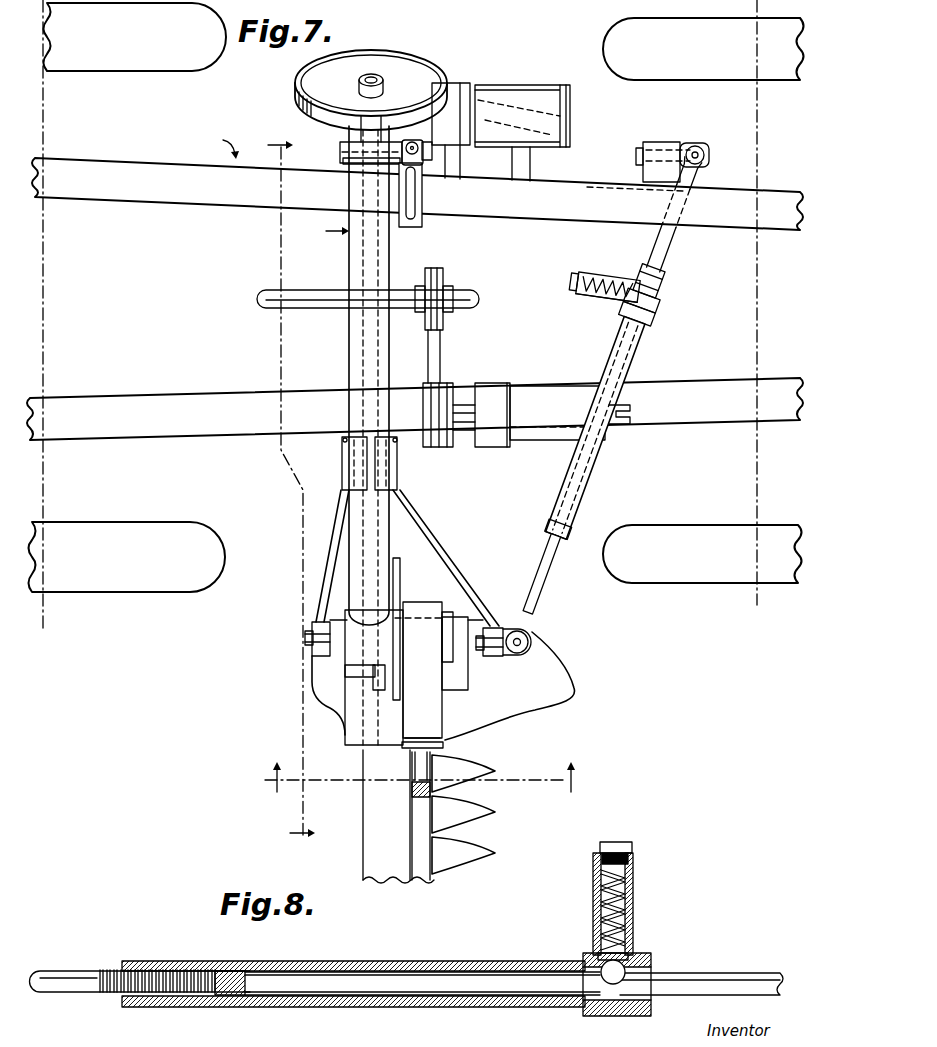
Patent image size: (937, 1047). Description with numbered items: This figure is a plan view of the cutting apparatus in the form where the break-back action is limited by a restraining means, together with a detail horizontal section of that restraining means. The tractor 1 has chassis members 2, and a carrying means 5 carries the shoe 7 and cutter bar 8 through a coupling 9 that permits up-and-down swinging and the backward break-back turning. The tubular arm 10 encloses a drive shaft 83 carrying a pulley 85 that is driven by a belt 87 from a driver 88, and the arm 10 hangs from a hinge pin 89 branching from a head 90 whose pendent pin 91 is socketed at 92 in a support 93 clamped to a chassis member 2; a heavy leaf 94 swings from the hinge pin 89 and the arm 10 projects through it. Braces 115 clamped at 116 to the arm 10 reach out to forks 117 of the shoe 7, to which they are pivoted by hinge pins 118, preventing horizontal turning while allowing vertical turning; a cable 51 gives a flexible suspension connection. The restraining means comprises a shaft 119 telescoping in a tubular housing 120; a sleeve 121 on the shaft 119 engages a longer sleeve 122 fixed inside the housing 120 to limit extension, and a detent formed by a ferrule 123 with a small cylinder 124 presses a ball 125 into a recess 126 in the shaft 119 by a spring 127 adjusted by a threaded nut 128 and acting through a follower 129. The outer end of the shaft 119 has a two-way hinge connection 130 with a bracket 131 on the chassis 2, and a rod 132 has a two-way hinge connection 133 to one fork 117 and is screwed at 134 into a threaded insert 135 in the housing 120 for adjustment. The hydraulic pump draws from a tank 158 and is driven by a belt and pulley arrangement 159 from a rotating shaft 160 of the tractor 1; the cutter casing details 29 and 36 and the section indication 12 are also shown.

In FIG. 7, the tractor 1 is at (224, 143).
In FIG. 7, the chassis members 2 is at (722, 198).
In FIG. 7, the carrying means 5 is at (330, 231).
In FIG. 7, the shoe 7 is at (538, 667).
In FIG. 7, the cutter bar 8 is at (378, 789).
In FIG. 7, the coupling 9 is at (291, 490).
In FIG. 7, the arm 10 is at (362, 249).
In FIG. 7, the section line 12 is at (425, 772).
In FIG. 7, the housing 29 is at (403, 603).
In FIG. 7, the digging bit 36 is at (420, 828).
In FIG. 7, the cable 51 is at (400, 563).
In FIG. 7, the shaft 83 is at (371, 75).
In FIG. 7, the pulley 85 is at (397, 55).
In FIG. 7, the belt 87 is at (487, 120).
In FIG. 7, the driver 88 is at (552, 85).
In FIG. 7, the hinge pin 89 is at (340, 148).
In FIG. 7, the head 90 is at (413, 140).
In FIG. 7, the pendent pin 91 is at (415, 145).
In FIG. 7, the socket 92 is at (445, 135).
In FIG. 7, the support 93 is at (422, 225).
In FIG. 7, the leaf 94 is at (345, 158).
In FIG. 7, the braces 115 is at (400, 500).
In FIG. 7, the clamp 116 is at (397, 467).
In FIG. 7, the forks 117 is at (317, 633).
In FIG. 7, the hinge pins 118 is at (310, 643).
In FIG. 7, the shaft 119 is at (665, 240).
In FIG. 8, the shaft 119 is at (718, 978).
In FIG. 7, the tubular housing 120 is at (603, 453).
In FIG. 8, the tubular housing 120 is at (442, 961).
In FIG. 8, the sleeve 121 is at (283, 967).
In FIG. 8, the sleeve 122 is at (515, 965).
In FIG. 7, the ferrule 123 is at (665, 292).
In FIG. 8, the ferrule 123 is at (623, 960).
In FIG. 7, the cylinder 124 is at (600, 273).
In FIG. 8, the cylinder 124 is at (635, 862).
In FIG. 7, the ball 125 is at (665, 293).
In FIG. 8, the ball 125 is at (642, 957).
In FIG. 7, the recess 126 is at (658, 310).
In FIG. 8, the recess 126 is at (602, 987).
In FIG. 7, the spring 127 is at (593, 302).
In FIG. 8, the spring 127 is at (638, 887).
In FIG. 7, the threaded nut 128 is at (578, 277).
In FIG. 8, the threaded nut 128 is at (627, 843).
In FIG. 8, the follower 129 is at (638, 910).
In FIG. 7, the two-way hinge connection 130 is at (694, 146).
In FIG. 7, the bracket 131 is at (650, 172).
In FIG. 7, the rod 132 is at (548, 558).
In FIG. 8, the rod 132 is at (55, 975).
In FIG. 7, the two-way hinge connection 133 is at (523, 637).
In FIG. 8, the screw connection 134 is at (133, 968).
In FIG. 8, the threaded insert 135 is at (235, 996).
In FIG. 7, the tank 158 is at (525, 437).
In FIG. 7, the belt and pulley arrangement 159 is at (437, 380).
In FIG. 7, the shaft 160 is at (308, 300).